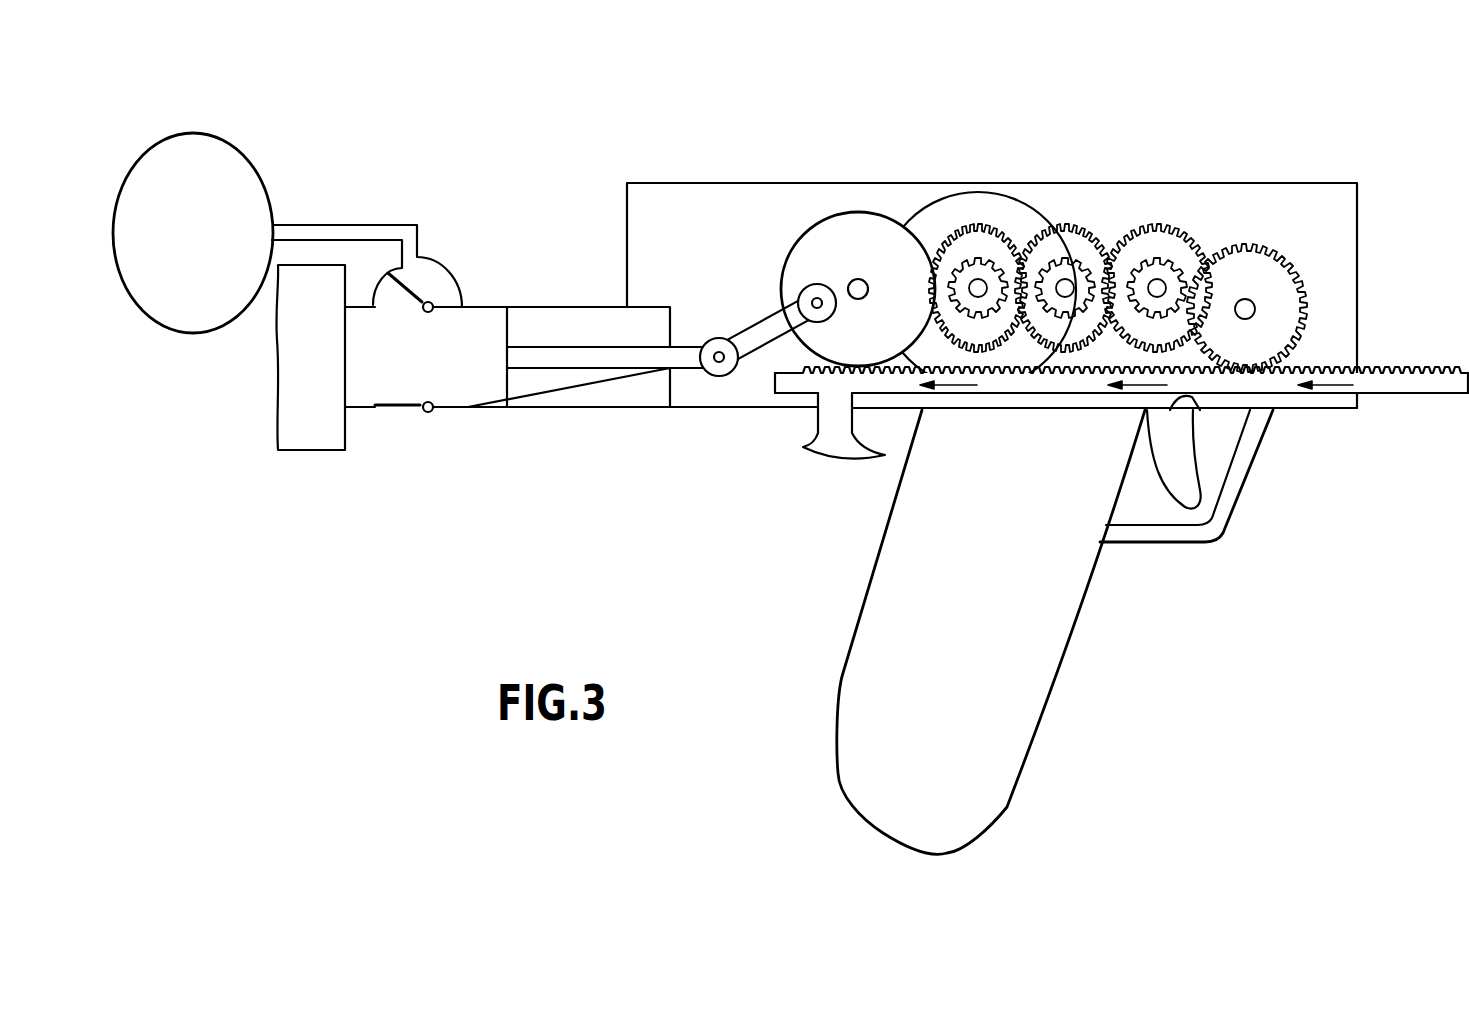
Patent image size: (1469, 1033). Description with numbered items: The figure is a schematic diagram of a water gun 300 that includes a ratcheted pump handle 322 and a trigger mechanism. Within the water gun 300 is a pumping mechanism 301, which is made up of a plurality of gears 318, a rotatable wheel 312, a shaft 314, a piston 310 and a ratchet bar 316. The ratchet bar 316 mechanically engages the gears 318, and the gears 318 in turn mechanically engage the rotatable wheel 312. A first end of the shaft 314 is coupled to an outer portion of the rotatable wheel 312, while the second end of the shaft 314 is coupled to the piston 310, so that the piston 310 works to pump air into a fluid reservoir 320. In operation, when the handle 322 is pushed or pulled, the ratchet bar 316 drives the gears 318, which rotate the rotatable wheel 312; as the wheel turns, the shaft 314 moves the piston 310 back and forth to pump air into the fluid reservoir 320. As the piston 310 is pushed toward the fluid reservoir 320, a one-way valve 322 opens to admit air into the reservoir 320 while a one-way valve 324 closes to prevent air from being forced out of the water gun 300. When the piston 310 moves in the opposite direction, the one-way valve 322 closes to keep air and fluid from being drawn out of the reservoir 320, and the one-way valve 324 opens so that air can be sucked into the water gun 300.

The water gun 300 is at (868, 90).
The pumping mechanism 301 is at (972, 190).
The piston 310 is at (605, 372).
The rotatable wheel 312 is at (852, 220).
The shaft 314 is at (757, 330).
The ratchet bar 316 is at (1410, 378).
The plurality of gears 318 is at (1087, 240).
The fluid reservoir 320 is at (257, 167).
The ratcheted pump handle / one-way valve 322 is at (410, 287).
The one-way valve 324 is at (407, 413).